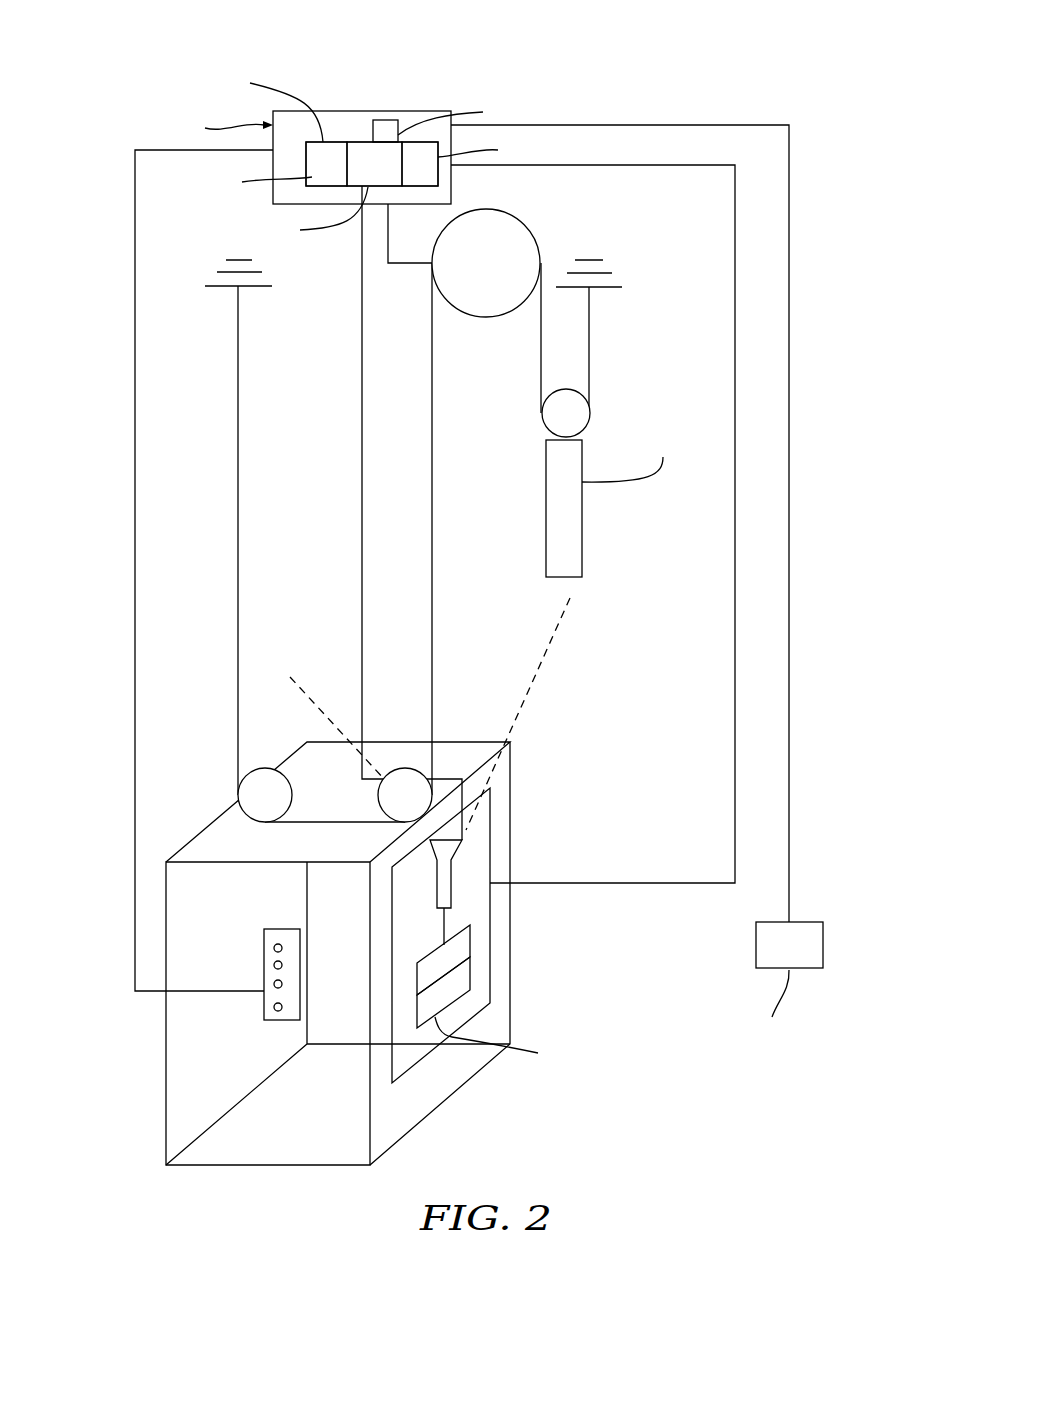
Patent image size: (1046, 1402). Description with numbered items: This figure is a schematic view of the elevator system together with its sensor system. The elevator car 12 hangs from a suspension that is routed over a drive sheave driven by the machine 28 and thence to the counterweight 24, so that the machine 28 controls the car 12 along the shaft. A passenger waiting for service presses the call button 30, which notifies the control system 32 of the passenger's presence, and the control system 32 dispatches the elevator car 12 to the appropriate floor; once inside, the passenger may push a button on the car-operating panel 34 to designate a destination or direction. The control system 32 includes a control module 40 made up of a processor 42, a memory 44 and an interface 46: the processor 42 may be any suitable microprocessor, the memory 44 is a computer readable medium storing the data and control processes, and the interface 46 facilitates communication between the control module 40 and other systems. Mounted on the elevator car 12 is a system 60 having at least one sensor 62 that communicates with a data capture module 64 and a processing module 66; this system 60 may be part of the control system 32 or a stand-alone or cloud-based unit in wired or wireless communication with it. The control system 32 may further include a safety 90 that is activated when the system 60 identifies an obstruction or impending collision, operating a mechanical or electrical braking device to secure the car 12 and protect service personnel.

The elevator car 12 is at (119, 833).
The counterweight 24 is at (546, 505).
The machine 28 is at (533, 237).
The call button 30 is at (823, 948).
The control system 32 is at (366, 103).
The car-operating panel 34 is at (263, 972).
The control module 40 is at (333, 142).
The processor 42 is at (299, 195).
The memory 44 is at (257, 167).
The interface 46 is at (463, 162).
The system 60 is at (494, 824).
The sensor 62 is at (452, 875).
The data capture module 64 is at (453, 948).
The processing module 66 is at (448, 985).
The safety 90 is at (388, 130).